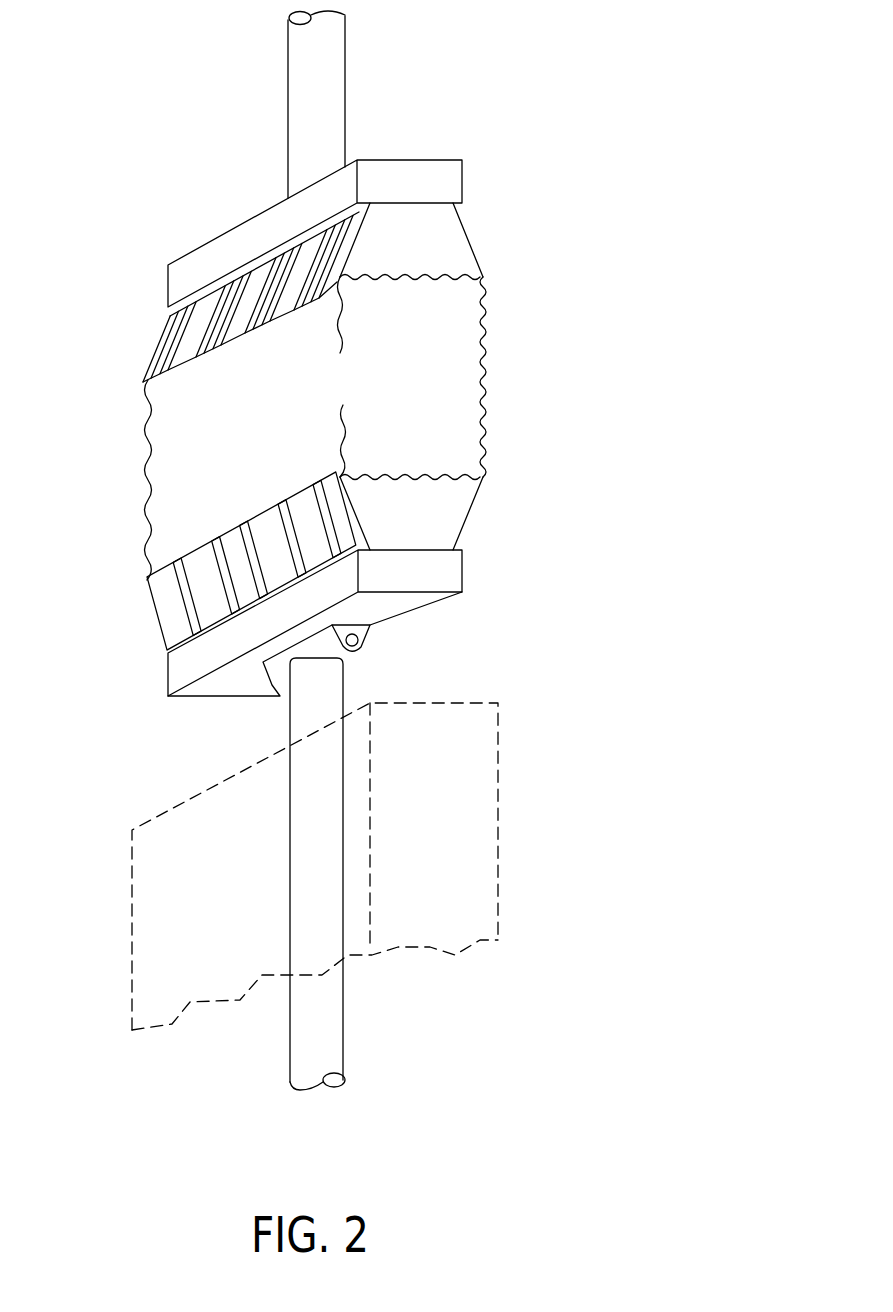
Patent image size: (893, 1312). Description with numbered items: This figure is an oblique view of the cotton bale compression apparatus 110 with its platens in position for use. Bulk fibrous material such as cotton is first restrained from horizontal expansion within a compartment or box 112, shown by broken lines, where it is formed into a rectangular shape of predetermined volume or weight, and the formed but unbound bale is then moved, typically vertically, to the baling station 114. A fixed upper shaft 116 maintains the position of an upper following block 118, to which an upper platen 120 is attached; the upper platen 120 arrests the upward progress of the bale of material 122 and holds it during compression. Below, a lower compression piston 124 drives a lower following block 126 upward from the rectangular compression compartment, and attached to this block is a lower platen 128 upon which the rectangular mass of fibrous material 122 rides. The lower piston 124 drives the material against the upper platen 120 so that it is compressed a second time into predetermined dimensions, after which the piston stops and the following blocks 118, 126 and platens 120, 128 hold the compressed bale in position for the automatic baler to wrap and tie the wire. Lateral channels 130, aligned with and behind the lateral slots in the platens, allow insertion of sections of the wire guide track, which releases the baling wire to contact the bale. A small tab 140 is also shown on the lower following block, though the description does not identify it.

The cotton bale compression apparatus 110 is at (655, 308).
The compartment or box 112 is at (138, 953).
The baling station 114 is at (502, 281).
The fixed upper shaft 116 is at (338, 46).
The upper following block 118 is at (450, 178).
The upper platen 120 is at (453, 232).
The bale of material 122 is at (150, 470).
The lower compression piston 124 is at (292, 1038).
The lower following block 126 is at (213, 688).
The lower platen 128 is at (160, 605).
The lateral channels 130 is at (183, 333).
The locking tab 140 is at (360, 645).